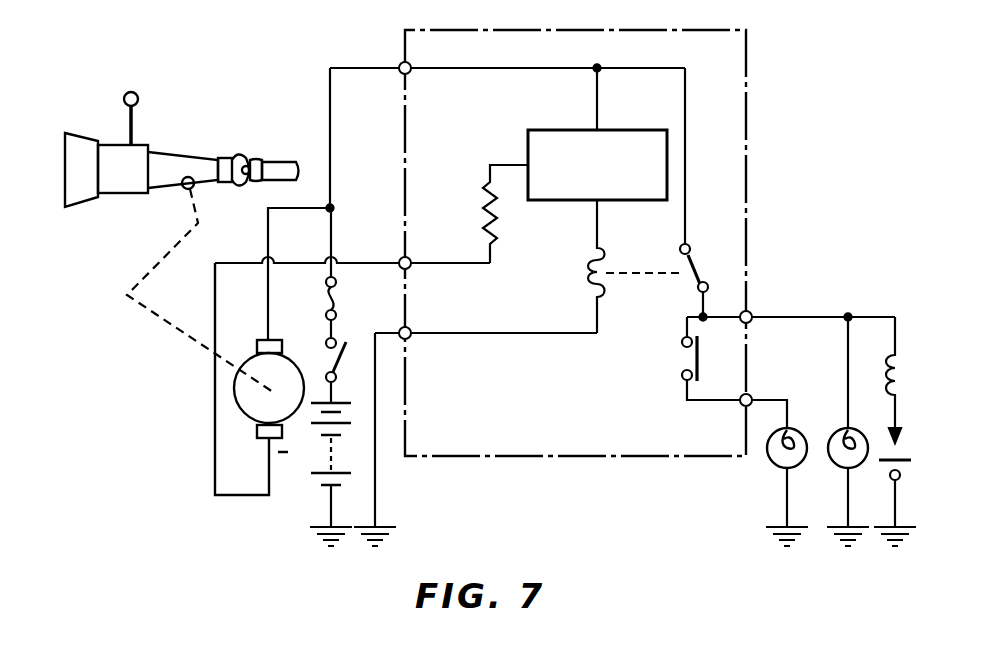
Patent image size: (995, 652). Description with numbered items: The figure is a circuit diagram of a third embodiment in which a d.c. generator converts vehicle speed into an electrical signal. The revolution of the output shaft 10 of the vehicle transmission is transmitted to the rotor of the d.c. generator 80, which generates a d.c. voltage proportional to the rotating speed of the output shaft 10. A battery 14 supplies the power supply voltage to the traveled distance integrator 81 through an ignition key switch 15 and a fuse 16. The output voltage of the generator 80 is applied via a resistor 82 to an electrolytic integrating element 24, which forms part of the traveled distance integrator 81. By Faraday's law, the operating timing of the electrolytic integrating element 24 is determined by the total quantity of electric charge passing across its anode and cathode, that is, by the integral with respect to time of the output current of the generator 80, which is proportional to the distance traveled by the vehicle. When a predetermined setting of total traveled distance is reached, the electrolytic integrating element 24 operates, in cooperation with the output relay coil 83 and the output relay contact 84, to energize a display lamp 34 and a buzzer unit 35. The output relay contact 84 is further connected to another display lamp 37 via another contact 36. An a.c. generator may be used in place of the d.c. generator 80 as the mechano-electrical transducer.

The output shaft of a transmission 10 is at (172, 152).
The battery 14 is at (318, 462).
The ignition key switch 15 is at (347, 357).
The fuse 16 is at (342, 294).
The electrolytic integrating element 24 is at (551, 129).
The display lamp 34 is at (831, 435).
The buzzer unit 35 is at (890, 371).
The contact 36 is at (681, 359).
The display lamp 37 is at (771, 458).
The d.c. generator 80 is at (247, 356).
The traveled distance integrator 81 is at (596, 459).
The resistor 82 is at (483, 202).
The output relay coil 83 is at (590, 274).
The output relay contact 84 is at (694, 270).